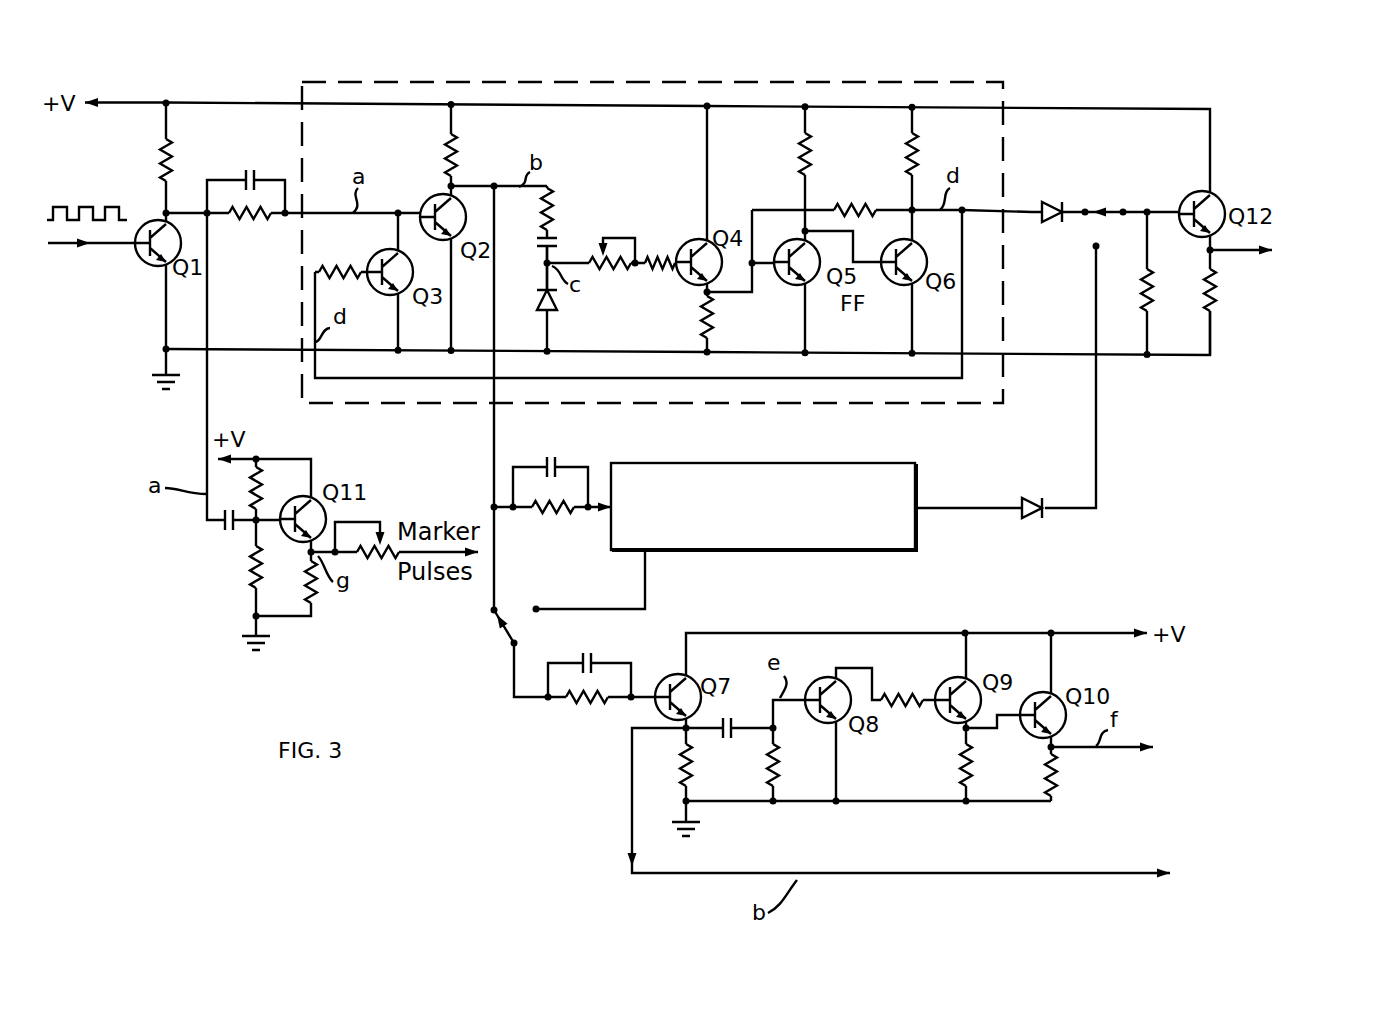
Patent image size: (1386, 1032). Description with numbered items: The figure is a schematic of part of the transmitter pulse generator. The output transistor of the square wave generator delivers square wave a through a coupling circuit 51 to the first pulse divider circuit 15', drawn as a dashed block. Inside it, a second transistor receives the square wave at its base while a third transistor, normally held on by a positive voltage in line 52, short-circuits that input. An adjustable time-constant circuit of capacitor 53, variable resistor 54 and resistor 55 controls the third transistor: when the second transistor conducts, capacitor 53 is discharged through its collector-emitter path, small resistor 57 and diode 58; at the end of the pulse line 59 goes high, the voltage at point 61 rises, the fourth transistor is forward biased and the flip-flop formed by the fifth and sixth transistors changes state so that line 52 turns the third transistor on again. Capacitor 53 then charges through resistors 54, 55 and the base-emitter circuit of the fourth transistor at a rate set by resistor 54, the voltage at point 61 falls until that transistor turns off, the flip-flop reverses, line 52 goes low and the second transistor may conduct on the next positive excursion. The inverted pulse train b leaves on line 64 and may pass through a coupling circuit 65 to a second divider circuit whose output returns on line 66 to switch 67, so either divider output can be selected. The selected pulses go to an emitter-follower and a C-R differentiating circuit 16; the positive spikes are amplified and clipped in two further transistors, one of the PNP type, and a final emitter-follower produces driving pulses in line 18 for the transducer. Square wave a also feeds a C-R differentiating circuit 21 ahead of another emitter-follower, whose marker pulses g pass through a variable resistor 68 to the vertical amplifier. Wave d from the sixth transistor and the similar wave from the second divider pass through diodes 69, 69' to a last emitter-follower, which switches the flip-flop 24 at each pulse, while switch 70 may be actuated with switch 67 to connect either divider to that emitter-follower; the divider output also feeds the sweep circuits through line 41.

The first pulse divider circuit 15' is at (652, 222).
The C-R differentiating circuit 16 is at (757, 747).
The line 18 is at (1110, 752).
The C-R differentiating circuit 21 is at (225, 558).
The flip-flop 24 is at (1282, 260).
The line 41 is at (892, 878).
The coupling circuit 51 is at (238, 182).
The line 52 is at (398, 403).
The capacitor 53 is at (555, 240).
The variable resistor 54 is at (604, 274).
The resistor 55 is at (656, 258).
The small resistor 57 is at (553, 202).
The diode 58 is at (553, 302).
The line 59 is at (468, 187).
The point 61 is at (541, 266).
The line 64 is at (494, 472).
The coupling circuit 65 is at (568, 490).
The line 66 is at (645, 594).
The switch 67 is at (512, 630).
The variable resistor 68 is at (378, 566).
The diode 69 is at (1067, 189).
The diode 69' is at (991, 489).
The switch 70 is at (1113, 222).